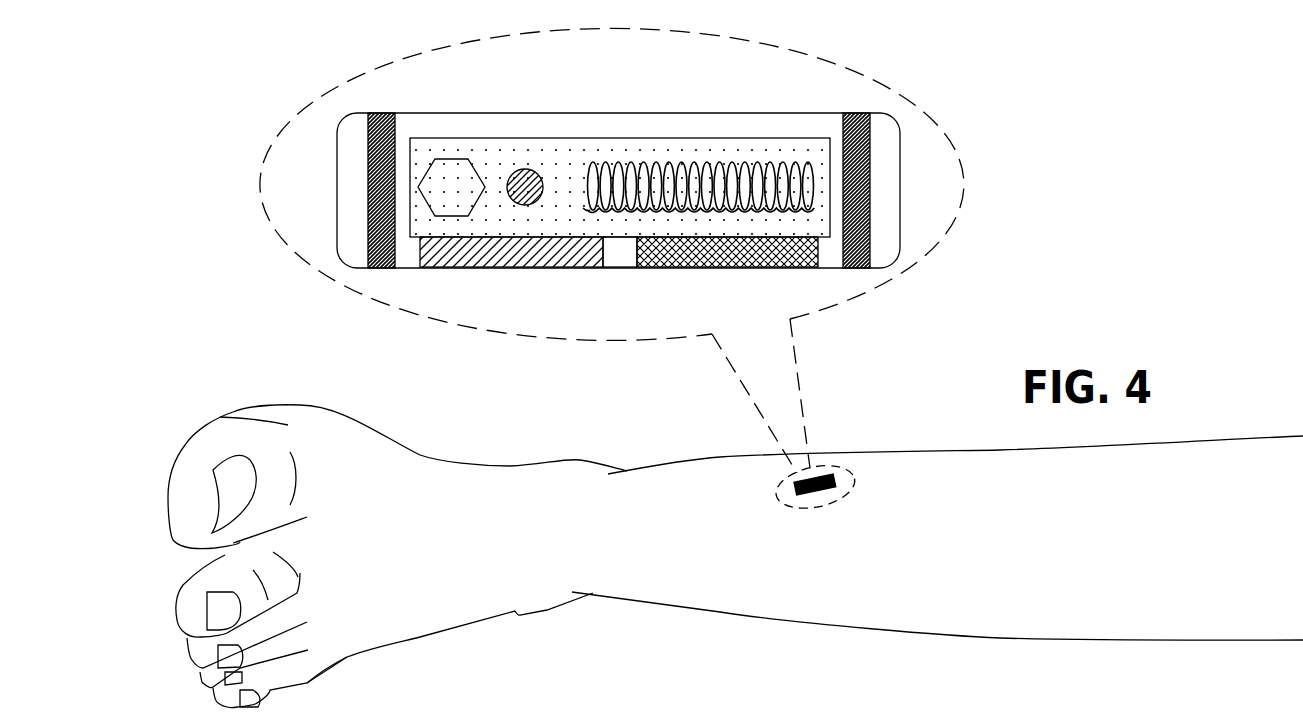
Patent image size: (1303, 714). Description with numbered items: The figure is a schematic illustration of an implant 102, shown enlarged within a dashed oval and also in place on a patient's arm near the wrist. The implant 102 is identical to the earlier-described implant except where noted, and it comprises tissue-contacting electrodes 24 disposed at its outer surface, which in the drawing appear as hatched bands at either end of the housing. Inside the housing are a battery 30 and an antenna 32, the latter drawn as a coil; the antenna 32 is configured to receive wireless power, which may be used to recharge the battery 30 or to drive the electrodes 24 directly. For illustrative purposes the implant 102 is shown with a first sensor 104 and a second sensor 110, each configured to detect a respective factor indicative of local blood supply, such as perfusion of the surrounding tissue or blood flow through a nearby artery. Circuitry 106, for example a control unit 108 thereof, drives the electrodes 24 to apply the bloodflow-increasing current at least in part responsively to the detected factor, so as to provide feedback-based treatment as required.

The implant 102 is at (325, 142).
The tissue-contacting electrodes 24 is at (383, 268).
The battery 30 is at (526, 170).
The antenna 32 is at (696, 166).
The first sensor 104 is at (505, 268).
The circuitry 106 is at (619, 268).
The control unit 108 is at (455, 170).
The second sensor 110 is at (762, 268).